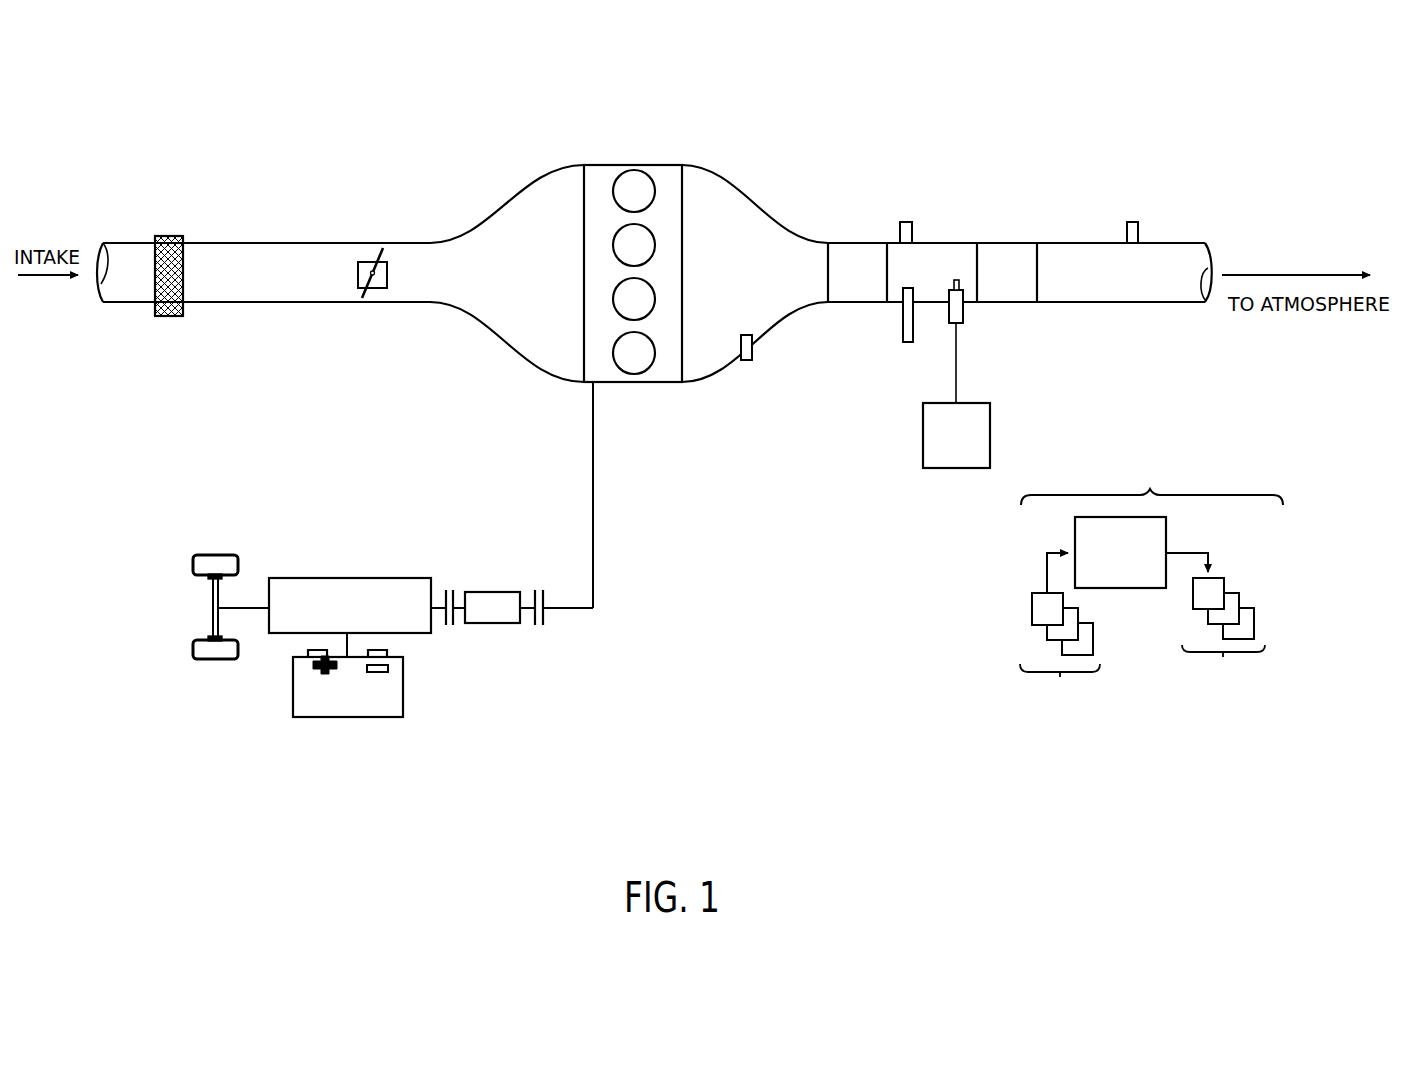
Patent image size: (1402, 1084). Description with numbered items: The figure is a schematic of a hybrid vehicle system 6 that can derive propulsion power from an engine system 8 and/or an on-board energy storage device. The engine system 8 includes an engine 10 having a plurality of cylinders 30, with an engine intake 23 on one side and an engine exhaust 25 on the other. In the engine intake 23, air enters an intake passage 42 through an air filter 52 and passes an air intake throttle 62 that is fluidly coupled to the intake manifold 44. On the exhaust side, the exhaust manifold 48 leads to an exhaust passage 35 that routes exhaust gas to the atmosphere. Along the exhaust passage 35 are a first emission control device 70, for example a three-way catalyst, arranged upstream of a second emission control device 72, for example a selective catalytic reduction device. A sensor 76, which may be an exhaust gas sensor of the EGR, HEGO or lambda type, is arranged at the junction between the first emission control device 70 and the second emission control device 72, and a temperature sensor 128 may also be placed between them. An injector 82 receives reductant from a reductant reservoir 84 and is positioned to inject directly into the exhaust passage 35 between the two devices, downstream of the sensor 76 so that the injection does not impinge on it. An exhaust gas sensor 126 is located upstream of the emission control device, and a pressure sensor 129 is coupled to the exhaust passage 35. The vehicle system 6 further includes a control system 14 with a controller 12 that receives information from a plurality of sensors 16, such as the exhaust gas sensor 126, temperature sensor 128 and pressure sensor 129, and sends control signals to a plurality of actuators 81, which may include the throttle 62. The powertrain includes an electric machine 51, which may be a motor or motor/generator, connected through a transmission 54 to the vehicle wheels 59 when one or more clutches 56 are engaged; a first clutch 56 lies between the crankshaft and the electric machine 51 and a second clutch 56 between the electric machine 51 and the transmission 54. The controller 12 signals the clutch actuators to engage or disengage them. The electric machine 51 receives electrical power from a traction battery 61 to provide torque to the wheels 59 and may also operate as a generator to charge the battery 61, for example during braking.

The hybrid vehicle system 6 is at (116, 140).
The engine system 8 is at (1242, 137).
The engine 10 is at (652, 273).
The controller 12 is at (1120, 552).
The control system 14 is at (1151, 580).
The sensors 16 is at (1060, 636).
The engine intake 23 is at (503, 190).
The engine exhaust 25 is at (803, 198).
The cylinders 30 is at (656, 185).
The exhaust passage 35 is at (1198, 241).
The intake passage 42 is at (133, 304).
The intake manifold 44 is at (542, 276).
The exhaust manifold 48 is at (762, 276).
The electric machine 51 is at (495, 627).
The air filter 52 is at (168, 235).
The transmission 54 is at (295, 634).
The clutches 56 is at (453, 597).
The vehicle wheels 59 is at (214, 659).
The traction battery 61 is at (353, 720).
The air intake throttle 62 is at (388, 284).
The first emission control device 70 is at (850, 243).
The second emission control device 72 is at (998, 243).
The sensor 76 is at (908, 344).
The actuators 81 is at (1216, 627).
The injector 82 is at (963, 323).
The reductant reservoir 84 is at (956, 395).
The exhaust gas sensor 126 is at (752, 337).
The temperature sensor 128 is at (910, 222).
The pressure sensor 129 is at (1146, 208).